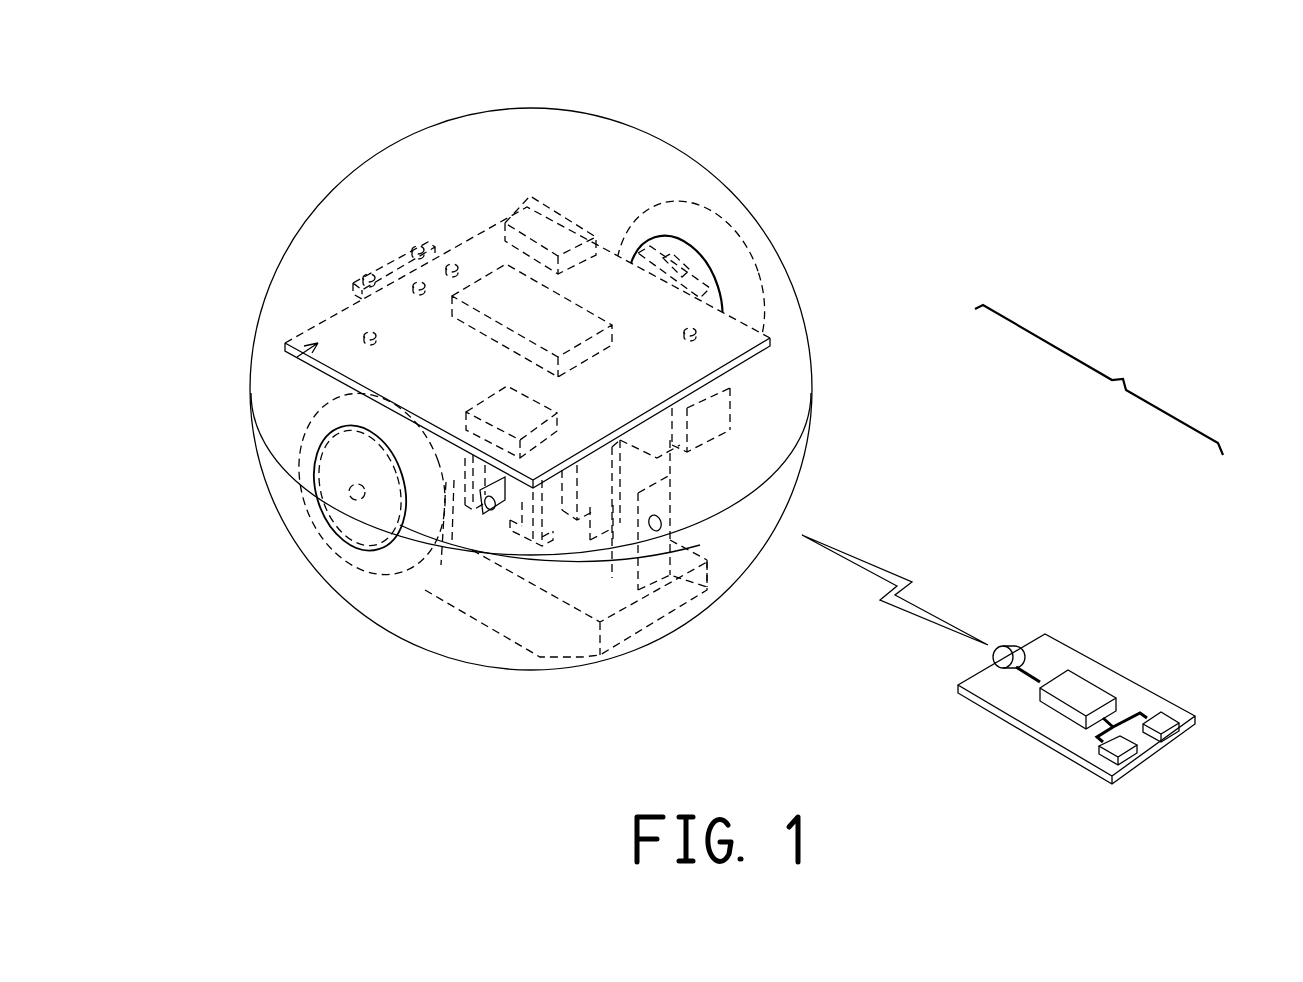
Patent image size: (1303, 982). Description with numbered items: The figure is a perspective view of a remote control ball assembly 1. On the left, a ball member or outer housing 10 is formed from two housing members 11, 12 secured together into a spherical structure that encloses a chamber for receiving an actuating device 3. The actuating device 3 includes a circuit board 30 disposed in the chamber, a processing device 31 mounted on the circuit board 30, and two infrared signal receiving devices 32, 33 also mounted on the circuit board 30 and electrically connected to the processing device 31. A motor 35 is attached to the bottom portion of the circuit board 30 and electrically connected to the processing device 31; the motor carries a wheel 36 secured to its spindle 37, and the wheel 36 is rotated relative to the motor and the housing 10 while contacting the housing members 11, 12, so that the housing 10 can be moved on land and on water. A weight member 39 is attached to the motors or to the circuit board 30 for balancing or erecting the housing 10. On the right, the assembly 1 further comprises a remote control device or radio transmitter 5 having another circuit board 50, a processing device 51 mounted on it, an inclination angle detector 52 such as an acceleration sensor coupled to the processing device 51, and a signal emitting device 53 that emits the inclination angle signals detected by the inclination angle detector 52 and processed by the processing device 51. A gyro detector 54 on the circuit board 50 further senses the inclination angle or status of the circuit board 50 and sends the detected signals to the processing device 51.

The remote control ball assembly 1 is at (895, 288).
The actuating device 3 is at (297, 355).
The remote control device 5 is at (1172, 600).
The outer housing 10 is at (713, 175).
The housing member 11 is at (778, 260).
The housing member 12 is at (740, 552).
The circuit board 30 is at (332, 323).
The processing device 31 is at (500, 297).
The signal receiving device 32 is at (557, 237).
The signal receiving device 33 is at (548, 409).
The motor 35 is at (452, 482).
The wheel 36 is at (720, 247).
The spindle 37 is at (350, 500).
The weight member 39 is at (560, 632).
The circuit board 50 is at (993, 690).
The processing device 51 is at (1083, 687).
The inclination angle detector 52 is at (1170, 718).
The signal emitting device 53 is at (1008, 648).
The gyro detector 54 is at (1117, 750).